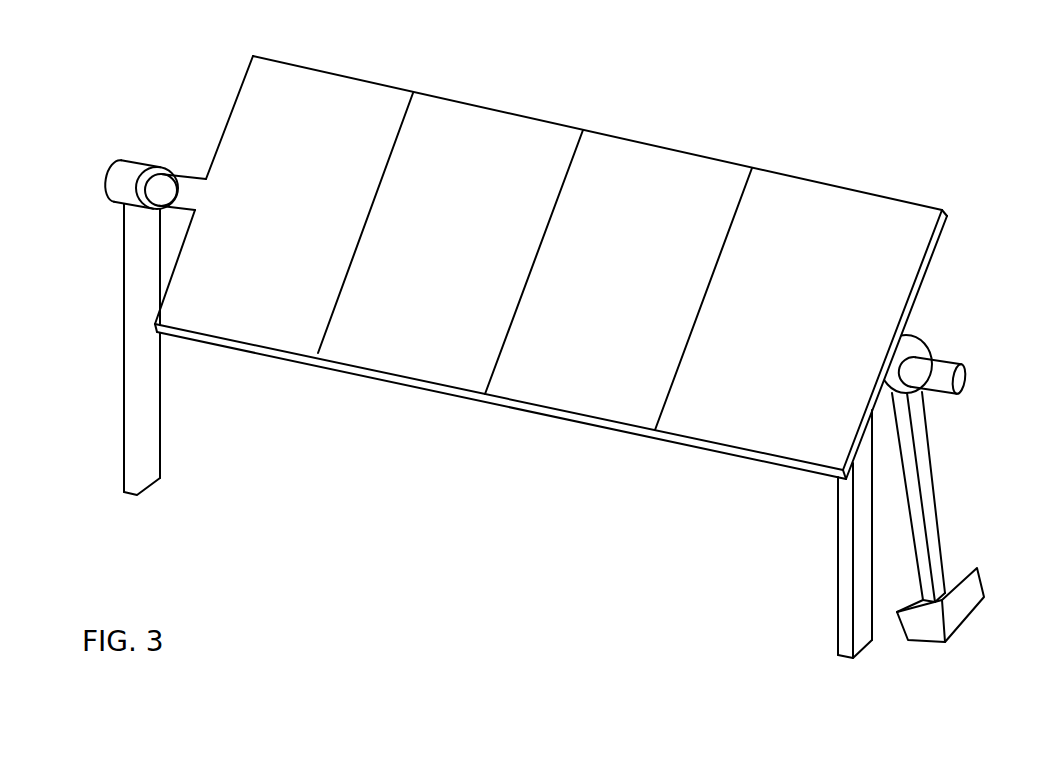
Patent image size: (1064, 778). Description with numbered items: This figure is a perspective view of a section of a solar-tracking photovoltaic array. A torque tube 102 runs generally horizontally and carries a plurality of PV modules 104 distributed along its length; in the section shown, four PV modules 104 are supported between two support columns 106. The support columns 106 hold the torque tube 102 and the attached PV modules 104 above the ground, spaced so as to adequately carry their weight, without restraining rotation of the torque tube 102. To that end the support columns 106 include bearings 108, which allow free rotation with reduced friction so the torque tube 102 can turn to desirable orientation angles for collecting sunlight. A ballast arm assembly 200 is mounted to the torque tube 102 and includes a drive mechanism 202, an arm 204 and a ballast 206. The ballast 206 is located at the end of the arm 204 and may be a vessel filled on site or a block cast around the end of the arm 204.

The torque tube 102 is at (194, 176).
The PV modules 104 is at (352, 77).
The support columns 106 is at (124, 445).
The bearings 108 is at (118, 204).
The ballast arm assemblies 200 is at (959, 474).
The drive mechanism 202 is at (912, 337).
The arm 204 is at (928, 437).
The ballast 206 is at (981, 583).